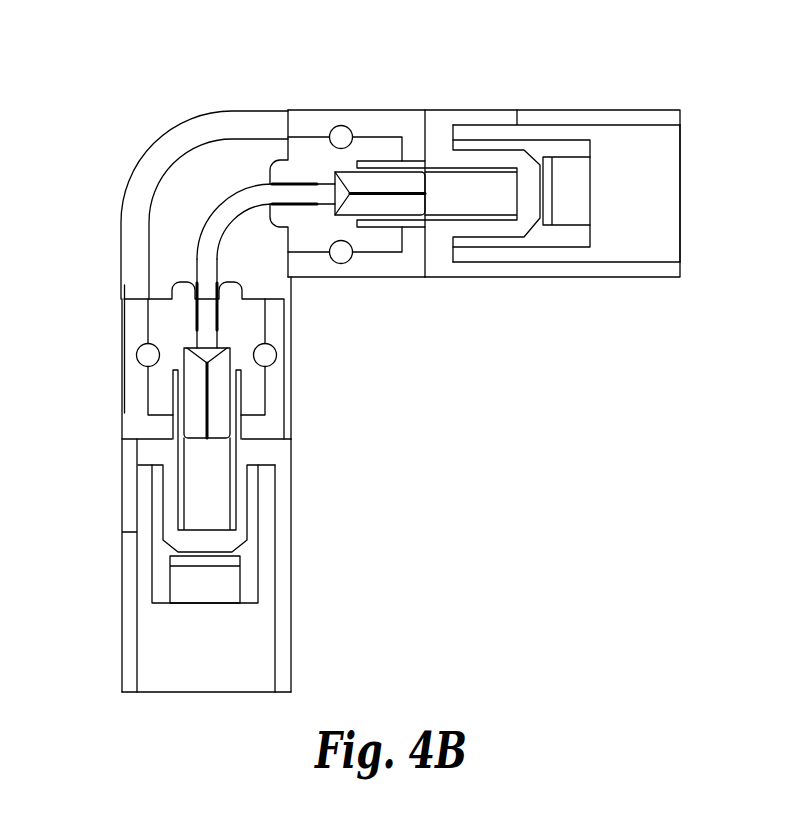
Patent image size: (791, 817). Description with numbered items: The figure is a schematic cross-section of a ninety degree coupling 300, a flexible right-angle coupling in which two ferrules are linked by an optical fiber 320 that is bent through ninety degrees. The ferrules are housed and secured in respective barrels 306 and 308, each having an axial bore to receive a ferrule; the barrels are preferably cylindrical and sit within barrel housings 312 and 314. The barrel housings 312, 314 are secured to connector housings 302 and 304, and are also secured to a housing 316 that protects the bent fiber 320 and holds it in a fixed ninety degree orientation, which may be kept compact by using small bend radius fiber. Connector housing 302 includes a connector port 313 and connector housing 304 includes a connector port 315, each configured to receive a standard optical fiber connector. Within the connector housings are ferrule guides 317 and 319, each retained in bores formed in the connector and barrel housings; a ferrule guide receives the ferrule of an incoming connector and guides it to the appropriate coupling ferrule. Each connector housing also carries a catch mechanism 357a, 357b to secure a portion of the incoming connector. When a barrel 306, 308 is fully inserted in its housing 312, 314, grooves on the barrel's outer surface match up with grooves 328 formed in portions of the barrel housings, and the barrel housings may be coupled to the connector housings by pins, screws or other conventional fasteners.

The 90 degree coupling 300 is at (215, 82).
The connector housing 302 is at (292, 530).
The connector housing 304 is at (583, 279).
The barrel 306 is at (160, 323).
The barrel 308 is at (382, 145).
The barrel housing 312 is at (292, 412).
The connector port 313 is at (205, 677).
The barrel housing 314 is at (377, 280).
The connector port 315 is at (648, 193).
The housing 316 is at (250, 123).
The ferrule guide 317 is at (184, 464).
The ferrule guide 319 is at (480, 167).
The optical fiber 320 is at (235, 217).
The grooves 328 is at (341, 125).
The catch mechanism 357a is at (188, 589).
The catch mechanism 357b is at (575, 175).